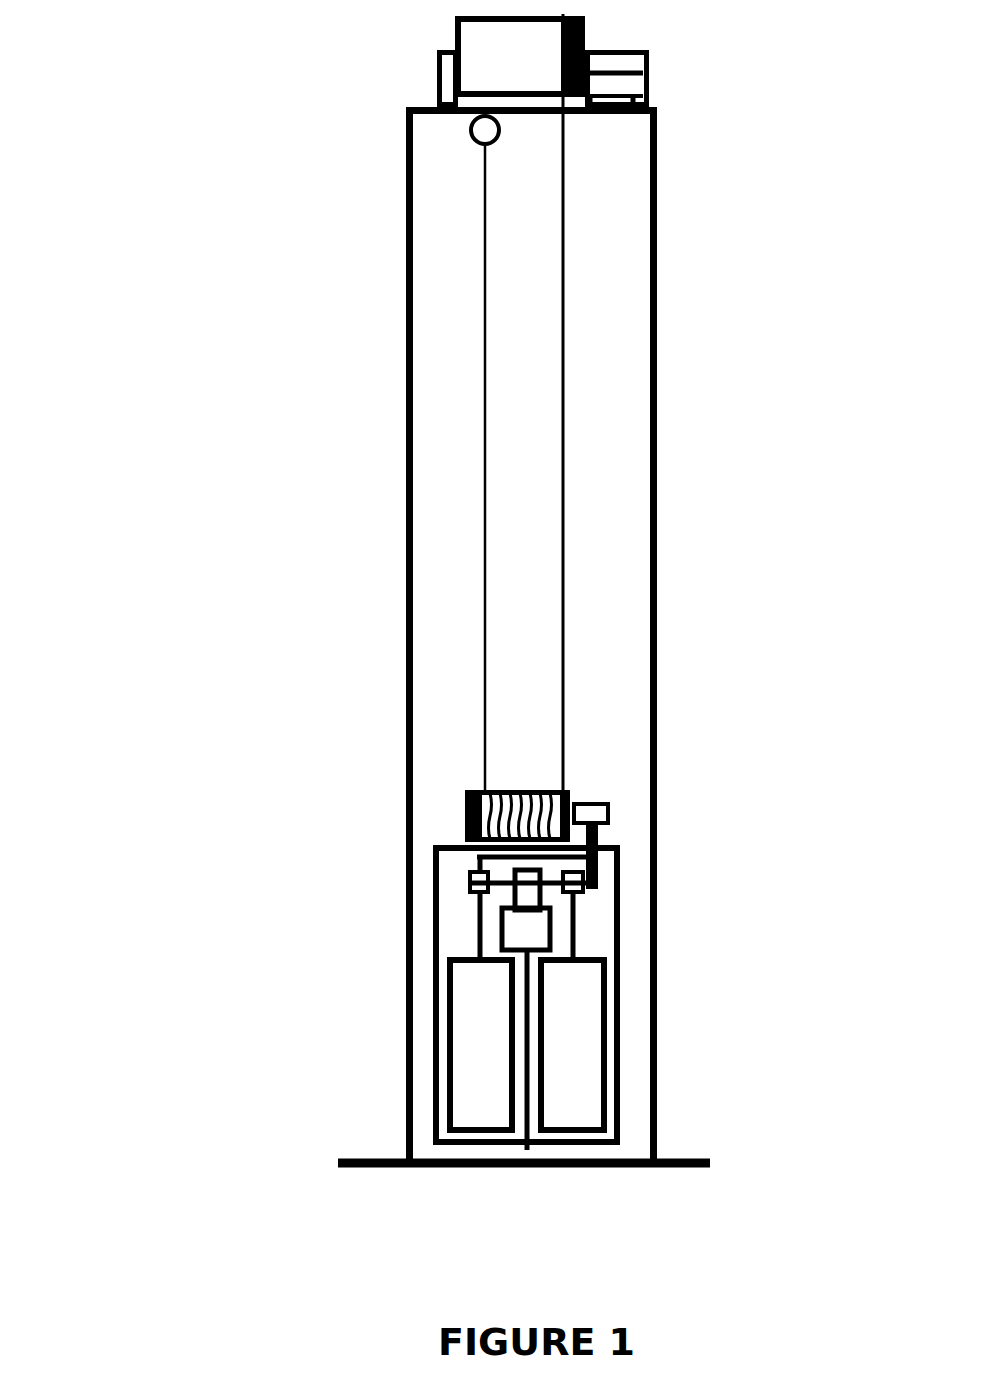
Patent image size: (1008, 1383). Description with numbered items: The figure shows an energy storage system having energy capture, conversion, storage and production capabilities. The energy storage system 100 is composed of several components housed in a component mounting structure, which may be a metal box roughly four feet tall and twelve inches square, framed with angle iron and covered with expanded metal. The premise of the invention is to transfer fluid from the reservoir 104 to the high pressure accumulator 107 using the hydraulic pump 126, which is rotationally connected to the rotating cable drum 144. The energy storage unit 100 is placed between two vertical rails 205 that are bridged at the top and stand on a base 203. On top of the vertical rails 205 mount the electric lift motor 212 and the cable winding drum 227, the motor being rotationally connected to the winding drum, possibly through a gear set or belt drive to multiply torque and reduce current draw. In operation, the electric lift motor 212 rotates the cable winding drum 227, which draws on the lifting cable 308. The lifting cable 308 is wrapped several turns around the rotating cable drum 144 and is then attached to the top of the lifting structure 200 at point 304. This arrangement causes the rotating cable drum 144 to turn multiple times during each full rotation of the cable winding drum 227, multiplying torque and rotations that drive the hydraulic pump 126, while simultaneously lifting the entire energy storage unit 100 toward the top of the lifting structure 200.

The lifting structure 200 is at (389, 456).
The vertical rails 205 is at (658, 642).
The base plate 203 is at (377, 1158).
The cable winding drum 227 is at (477, 74).
The electric lift motor 212 is at (608, 84).
The lifting cable 308 is at (563, 326).
The attachment point 304 is at (470, 130).
The rotating cable drum 144 is at (465, 818).
The hydraulic pump 126 is at (590, 815).
The energy storage system 100 is at (434, 1028).
The reservoir 104 is at (482, 990).
The high pressure accumulator 107 is at (577, 1028).